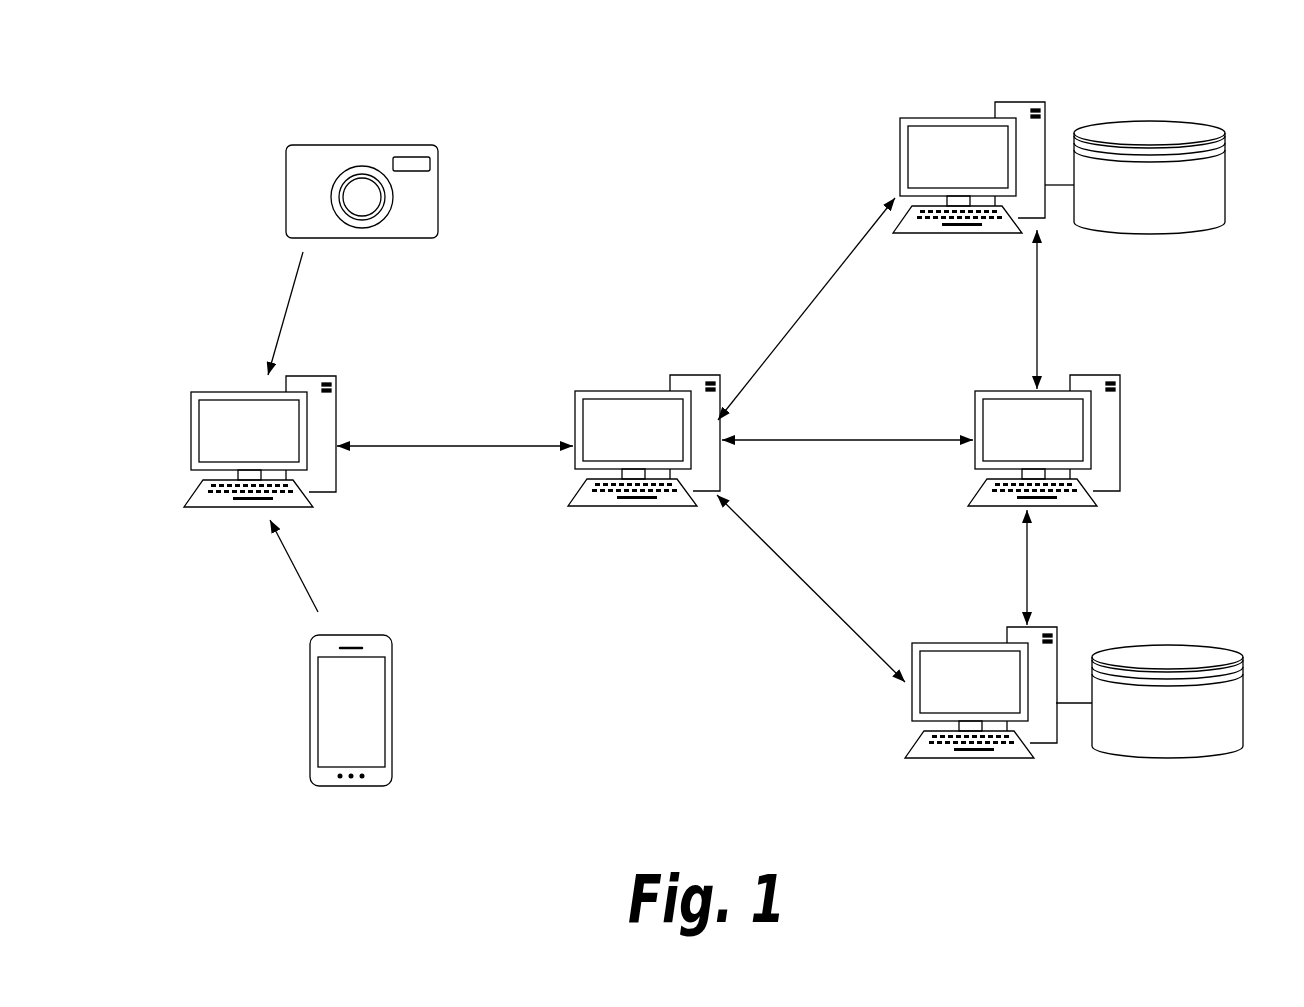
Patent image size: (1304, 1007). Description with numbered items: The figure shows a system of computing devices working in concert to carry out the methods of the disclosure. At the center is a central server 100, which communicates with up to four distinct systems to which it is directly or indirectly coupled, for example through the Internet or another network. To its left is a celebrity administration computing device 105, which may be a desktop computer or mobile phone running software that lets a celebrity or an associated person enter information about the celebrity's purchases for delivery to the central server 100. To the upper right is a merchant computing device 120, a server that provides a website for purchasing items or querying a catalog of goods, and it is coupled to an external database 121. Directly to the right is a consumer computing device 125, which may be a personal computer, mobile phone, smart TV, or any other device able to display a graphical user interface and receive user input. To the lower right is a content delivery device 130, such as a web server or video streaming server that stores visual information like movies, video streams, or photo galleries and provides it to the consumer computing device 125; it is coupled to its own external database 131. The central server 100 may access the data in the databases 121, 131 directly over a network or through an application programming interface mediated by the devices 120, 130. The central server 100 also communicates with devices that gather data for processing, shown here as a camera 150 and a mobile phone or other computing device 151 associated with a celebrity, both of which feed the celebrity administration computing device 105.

The central server 100 is at (622, 392).
The celebrity administration computing device 105 is at (200, 398).
The merchant computing device 120 is at (903, 122).
The external database 121 is at (1215, 135).
The consumer computing device 125 is at (1093, 440).
The content delivery device 130 is at (934, 645).
The external database 131 is at (1230, 655).
The camera 150 is at (287, 148).
The mobile phone or other computing device 151 is at (312, 783).